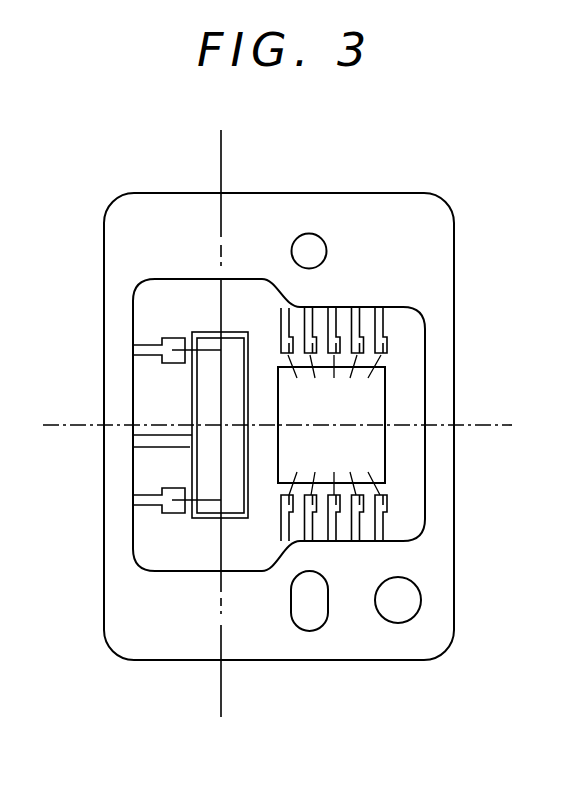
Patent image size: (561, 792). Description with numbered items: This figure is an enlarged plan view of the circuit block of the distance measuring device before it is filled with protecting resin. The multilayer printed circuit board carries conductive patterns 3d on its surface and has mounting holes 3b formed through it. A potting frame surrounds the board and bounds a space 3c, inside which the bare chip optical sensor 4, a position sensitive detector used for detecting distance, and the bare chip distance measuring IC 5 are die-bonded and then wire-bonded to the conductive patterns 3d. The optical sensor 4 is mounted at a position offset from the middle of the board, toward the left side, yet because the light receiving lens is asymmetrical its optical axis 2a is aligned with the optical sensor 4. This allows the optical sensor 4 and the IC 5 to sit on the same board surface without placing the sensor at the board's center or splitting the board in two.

The optical axis 2a is at (222, 427).
The mounting holes 3b is at (314, 240).
The space 3c is at (260, 307).
The conductive patterns 3d is at (355, 320).
The optical sensor 4 is at (205, 395).
The distance measuring IC 5 is at (375, 454).